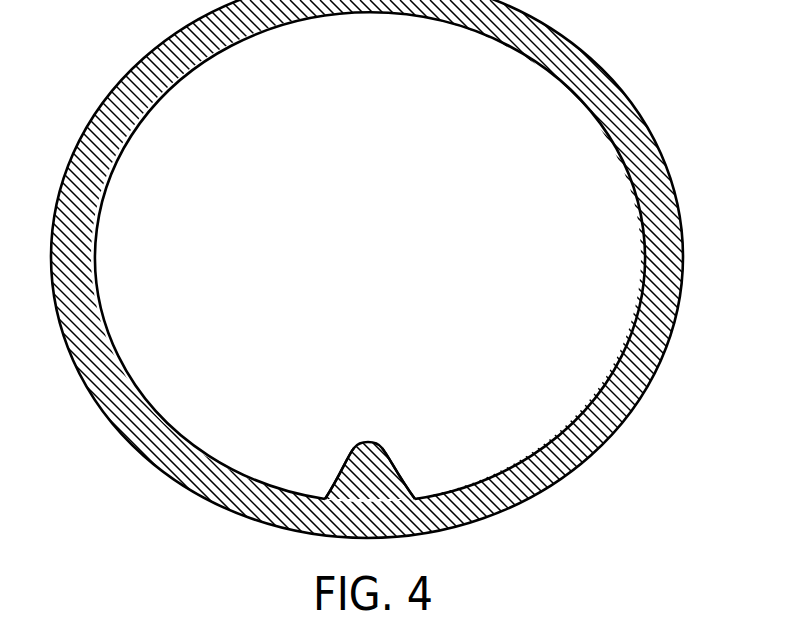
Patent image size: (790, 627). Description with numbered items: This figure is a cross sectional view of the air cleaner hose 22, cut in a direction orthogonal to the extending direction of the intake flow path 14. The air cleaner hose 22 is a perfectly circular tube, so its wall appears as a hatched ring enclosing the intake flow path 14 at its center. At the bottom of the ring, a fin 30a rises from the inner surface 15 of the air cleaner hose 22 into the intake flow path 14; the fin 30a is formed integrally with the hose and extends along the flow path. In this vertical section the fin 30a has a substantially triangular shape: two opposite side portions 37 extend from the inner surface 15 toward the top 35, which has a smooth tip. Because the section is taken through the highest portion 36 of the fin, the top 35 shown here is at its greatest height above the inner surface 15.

The air cleaner hose 22 is at (613, 80).
The intake flow path 14 is at (382, 259).
The inner surface 15 is at (230, 471).
The top 35 is at (370, 430).
The highest portion 36 is at (369, 438).
The side portions 37 is at (337, 478).
The fin 30a is at (409, 449).